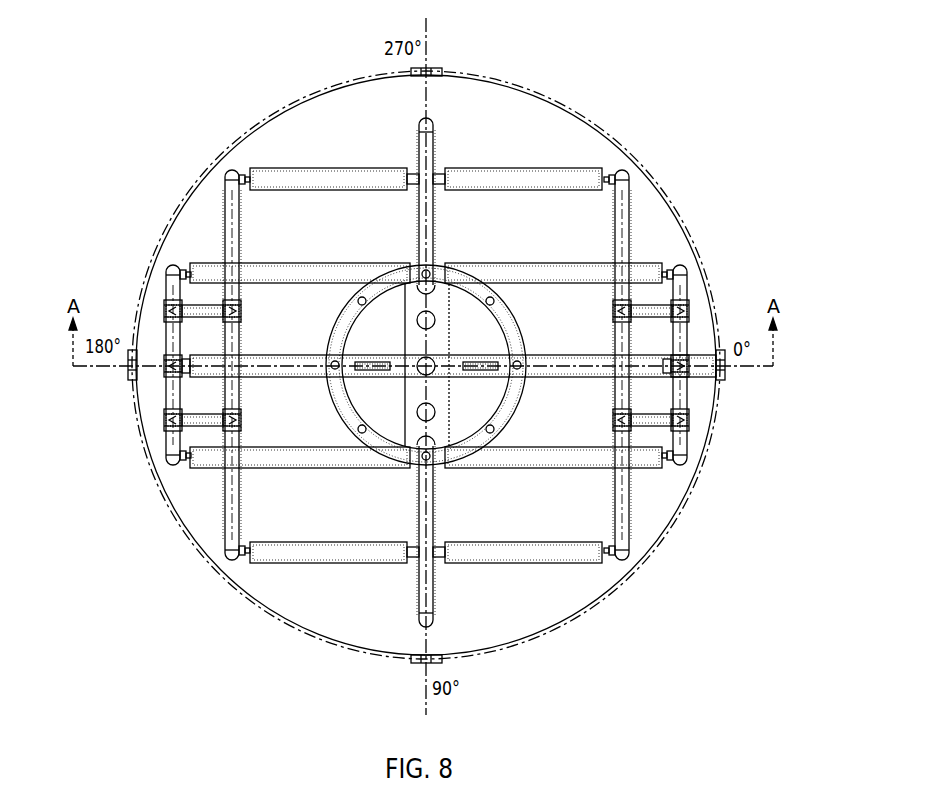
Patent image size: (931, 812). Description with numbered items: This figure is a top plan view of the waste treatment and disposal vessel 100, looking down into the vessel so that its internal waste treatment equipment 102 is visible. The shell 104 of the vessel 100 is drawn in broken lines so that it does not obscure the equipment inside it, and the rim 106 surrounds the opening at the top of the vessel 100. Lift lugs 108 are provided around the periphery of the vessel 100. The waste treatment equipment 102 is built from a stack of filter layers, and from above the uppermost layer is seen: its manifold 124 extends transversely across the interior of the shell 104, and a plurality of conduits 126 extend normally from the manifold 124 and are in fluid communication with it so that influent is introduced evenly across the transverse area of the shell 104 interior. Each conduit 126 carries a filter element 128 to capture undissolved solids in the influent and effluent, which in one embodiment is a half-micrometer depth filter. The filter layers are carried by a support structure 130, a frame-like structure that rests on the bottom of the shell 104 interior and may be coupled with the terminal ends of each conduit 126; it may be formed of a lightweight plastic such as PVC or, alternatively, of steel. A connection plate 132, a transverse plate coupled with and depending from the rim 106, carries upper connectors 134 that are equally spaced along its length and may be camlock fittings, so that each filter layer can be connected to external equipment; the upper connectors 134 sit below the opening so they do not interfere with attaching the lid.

The waste treatment and disposal vessel 100 is at (198, 132).
The waste treatment equipment 102 is at (344, 118).
The shell 104 is at (688, 493).
The rim 106 is at (522, 402).
The lift lugs 108 is at (445, 70).
The manifold 124 is at (436, 516).
The conduits 126 is at (440, 563).
The filter element 128 is at (504, 168).
The support structure 130 is at (224, 222).
The connection plate 132 is at (452, 331).
The upper connectors 134 is at (440, 314).